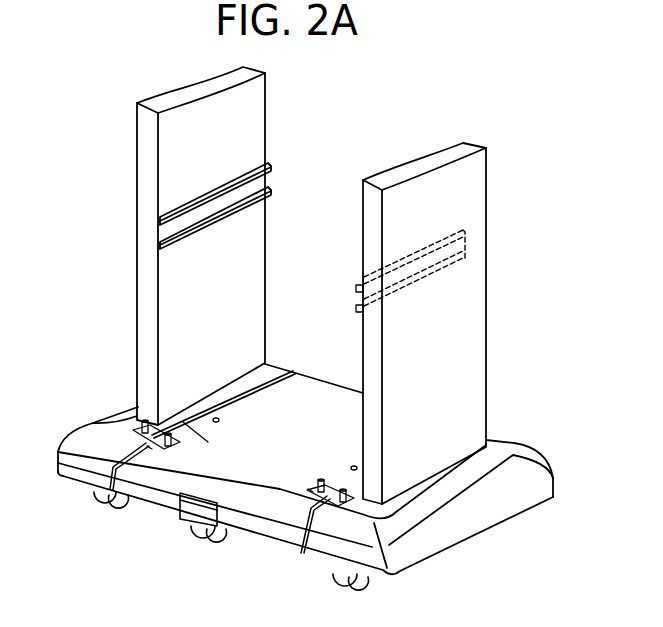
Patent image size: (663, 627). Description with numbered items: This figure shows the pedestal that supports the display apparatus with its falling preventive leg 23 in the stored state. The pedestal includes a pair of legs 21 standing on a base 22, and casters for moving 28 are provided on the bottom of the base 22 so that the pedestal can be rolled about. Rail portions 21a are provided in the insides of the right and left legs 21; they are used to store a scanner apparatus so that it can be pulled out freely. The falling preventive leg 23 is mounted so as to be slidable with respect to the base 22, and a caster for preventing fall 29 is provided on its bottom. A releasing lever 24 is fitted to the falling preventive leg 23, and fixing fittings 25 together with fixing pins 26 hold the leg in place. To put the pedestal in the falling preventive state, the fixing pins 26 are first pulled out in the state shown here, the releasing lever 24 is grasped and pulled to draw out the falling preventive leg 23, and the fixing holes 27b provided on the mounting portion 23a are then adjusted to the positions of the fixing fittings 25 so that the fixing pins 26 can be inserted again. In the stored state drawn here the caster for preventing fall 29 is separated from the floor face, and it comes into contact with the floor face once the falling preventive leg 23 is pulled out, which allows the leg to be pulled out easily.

The legs 21 is at (141, 300).
The rail portions 21a is at (357, 287).
The base 22 is at (557, 458).
The falling preventive leg 23 is at (157, 505).
The mounting portion 23a is at (137, 408).
The releasing lever 24 is at (195, 514).
The fixing fittings 25 is at (142, 430).
The fixing pins 26 is at (150, 448).
The fixing holes 27b is at (218, 418).
The casters for moving 28 is at (93, 495).
The caster for preventing fall 29 is at (203, 543).